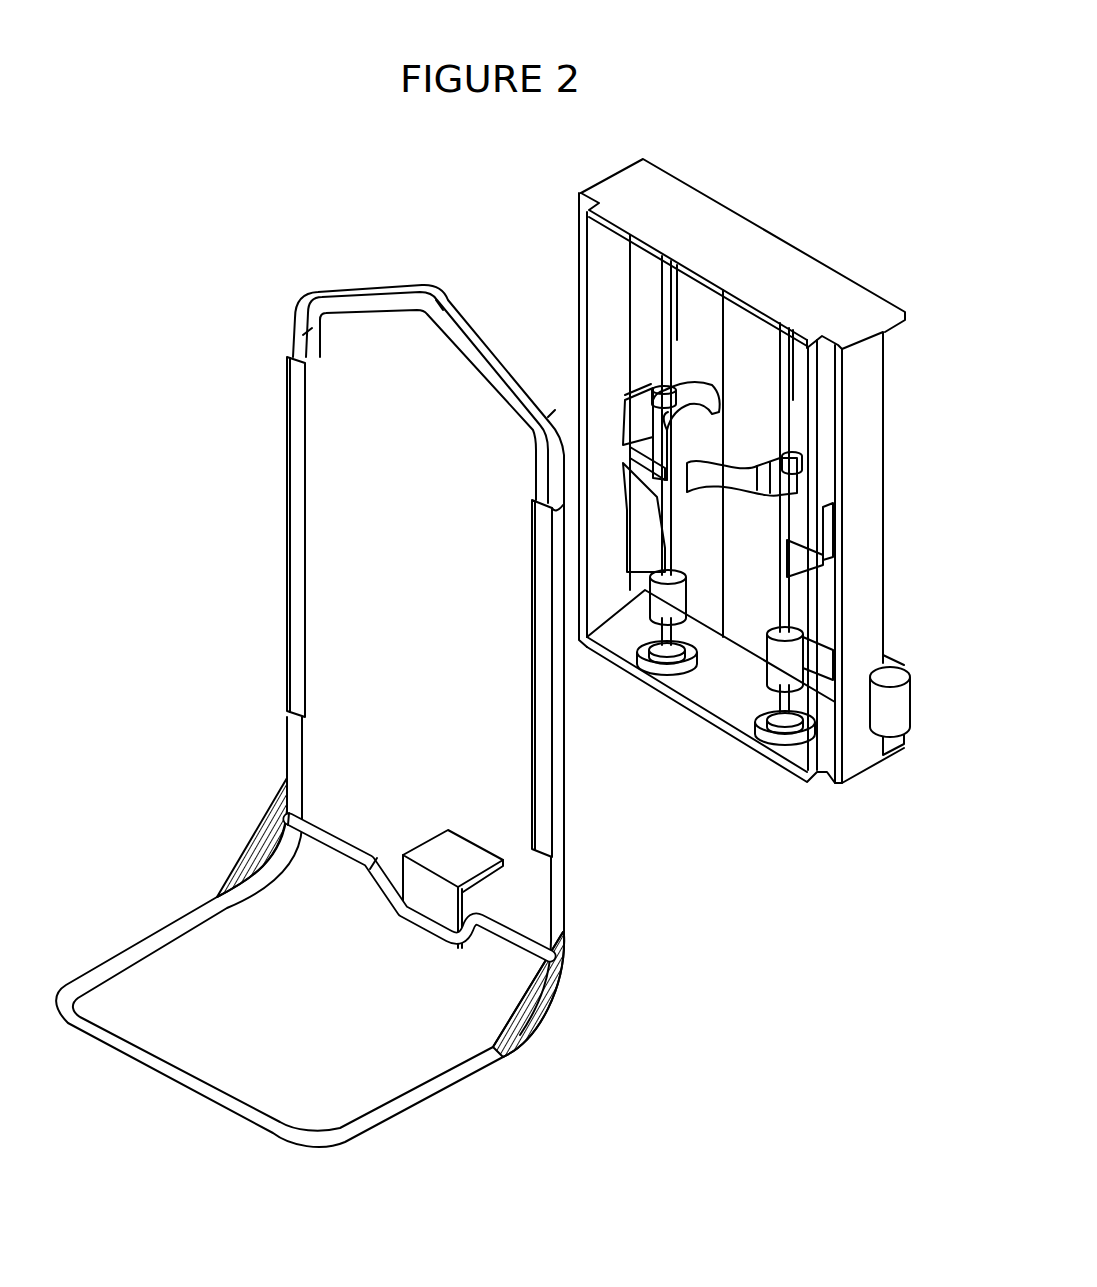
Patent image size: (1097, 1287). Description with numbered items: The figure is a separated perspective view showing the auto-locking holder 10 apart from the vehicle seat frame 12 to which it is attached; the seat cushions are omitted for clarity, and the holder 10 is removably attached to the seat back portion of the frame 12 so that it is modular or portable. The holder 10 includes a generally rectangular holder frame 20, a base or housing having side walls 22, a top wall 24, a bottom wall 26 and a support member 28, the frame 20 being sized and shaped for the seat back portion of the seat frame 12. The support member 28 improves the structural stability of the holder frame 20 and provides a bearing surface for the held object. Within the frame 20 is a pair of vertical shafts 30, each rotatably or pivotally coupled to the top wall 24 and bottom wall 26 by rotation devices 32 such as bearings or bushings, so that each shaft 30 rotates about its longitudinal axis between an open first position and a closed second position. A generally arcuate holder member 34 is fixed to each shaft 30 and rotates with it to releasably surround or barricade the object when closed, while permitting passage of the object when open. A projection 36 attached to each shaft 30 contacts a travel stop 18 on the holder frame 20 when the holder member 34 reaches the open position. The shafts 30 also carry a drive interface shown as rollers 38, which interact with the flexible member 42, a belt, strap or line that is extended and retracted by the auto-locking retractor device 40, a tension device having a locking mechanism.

The auto-locking holder 10 is at (803, 103).
The vehicle seat frame 12 is at (292, 577).
The travel stop 18 is at (630, 410).
The holder frame 20 is at (566, 225).
The side walls 22 is at (600, 272).
The top wall 24 is at (653, 195).
The bottom wall 26 is at (623, 648).
The support member 28 is at (750, 328).
The shafts 30 is at (790, 385).
The rotation devices 32 is at (755, 723).
The holder member 34 is at (705, 465).
The projection 36 is at (622, 423).
The rollers 38 is at (740, 655).
The auto-locking retractor device 40 is at (900, 698).
The flexible member 42 is at (628, 510).